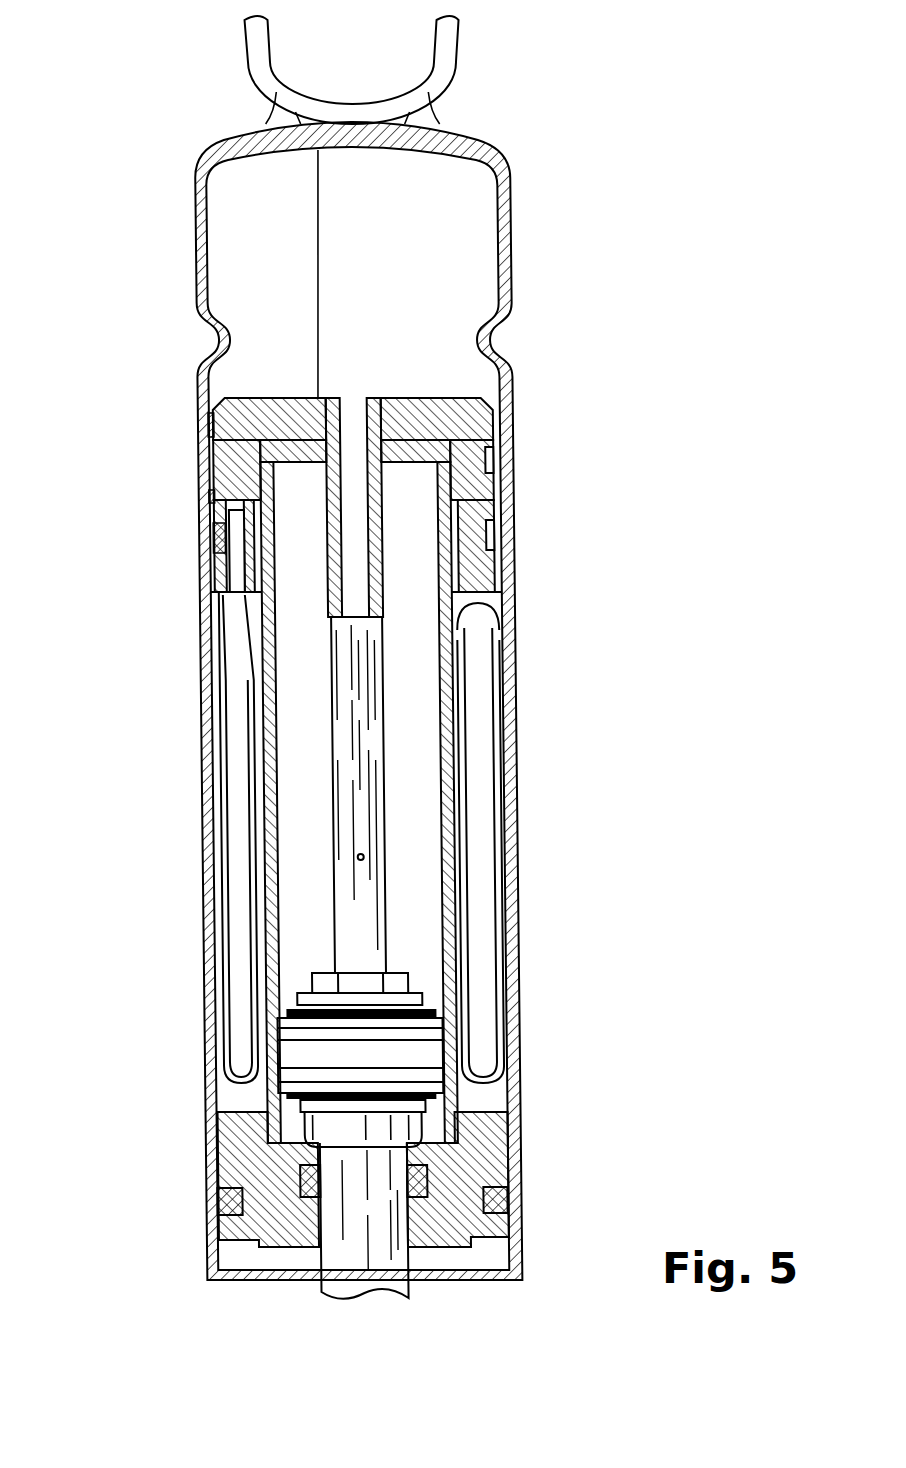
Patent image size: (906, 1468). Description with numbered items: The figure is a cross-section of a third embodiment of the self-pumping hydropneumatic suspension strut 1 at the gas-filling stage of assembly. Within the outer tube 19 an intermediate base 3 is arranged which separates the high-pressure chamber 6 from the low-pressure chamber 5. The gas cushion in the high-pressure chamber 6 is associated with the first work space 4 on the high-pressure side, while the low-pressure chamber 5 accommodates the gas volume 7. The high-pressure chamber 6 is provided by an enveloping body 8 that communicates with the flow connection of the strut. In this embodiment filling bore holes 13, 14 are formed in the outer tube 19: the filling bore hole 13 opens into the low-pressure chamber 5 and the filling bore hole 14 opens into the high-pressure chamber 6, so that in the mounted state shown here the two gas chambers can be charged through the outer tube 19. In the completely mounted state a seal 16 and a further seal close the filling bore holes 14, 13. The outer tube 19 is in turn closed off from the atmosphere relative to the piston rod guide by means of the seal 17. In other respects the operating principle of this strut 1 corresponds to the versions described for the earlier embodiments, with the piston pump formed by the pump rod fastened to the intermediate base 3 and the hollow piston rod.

The self-pumping hydropneumatic suspension strut 1 is at (361, 657).
The intermediate base 3 is at (204, 383).
The first work space 4 is at (424, 648).
The low-pressure chamber 5 is at (475, 265).
The high-pressure chamber 6 is at (232, 913).
The gas volume 7 is at (375, 701).
The enveloping body 8 is at (201, 707).
The filling bore hole 13 is at (209, 498).
The filling bore hole 14 is at (210, 428).
The seal 16 is at (204, 537).
The seal 17 is at (517, 1178).
The outer tube 19 is at (514, 957).